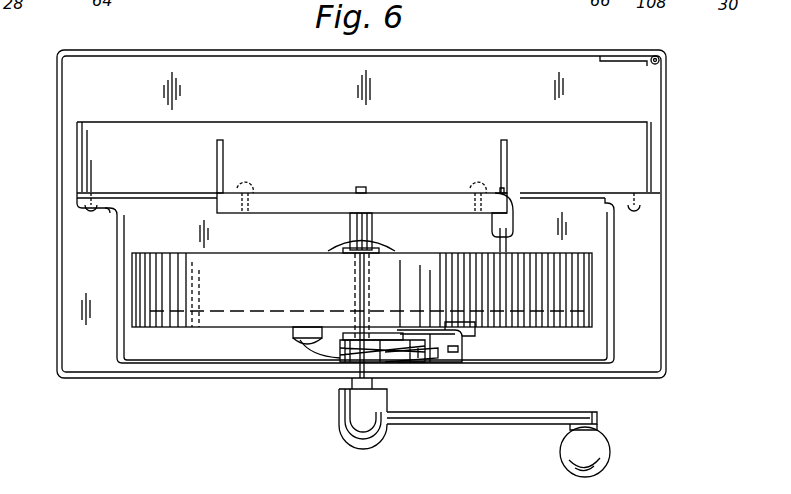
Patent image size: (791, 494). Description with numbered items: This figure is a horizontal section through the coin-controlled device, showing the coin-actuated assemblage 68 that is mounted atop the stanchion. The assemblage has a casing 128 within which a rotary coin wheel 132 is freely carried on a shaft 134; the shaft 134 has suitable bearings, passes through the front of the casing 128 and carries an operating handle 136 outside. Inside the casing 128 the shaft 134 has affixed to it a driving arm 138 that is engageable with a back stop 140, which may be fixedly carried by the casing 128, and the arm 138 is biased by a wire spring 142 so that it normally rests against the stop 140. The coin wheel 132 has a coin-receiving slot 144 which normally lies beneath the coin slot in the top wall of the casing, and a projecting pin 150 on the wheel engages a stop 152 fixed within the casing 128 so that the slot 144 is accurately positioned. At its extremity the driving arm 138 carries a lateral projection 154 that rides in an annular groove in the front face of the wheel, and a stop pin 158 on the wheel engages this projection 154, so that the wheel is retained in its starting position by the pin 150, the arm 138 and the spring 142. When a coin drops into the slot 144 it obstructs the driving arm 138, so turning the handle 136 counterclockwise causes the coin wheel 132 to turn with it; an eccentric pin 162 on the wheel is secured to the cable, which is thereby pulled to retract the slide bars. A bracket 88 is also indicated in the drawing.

The coin-actuated assemblage 68 is at (104, 398).
The support bracket 88 is at (326, 336).
The casing 128 is at (667, 262).
The rotary coin wheel 132 is at (231, 302).
The shaft 134 is at (374, 229).
The operating handle 136 is at (454, 426).
The driving arm 138 is at (361, 341).
The back stop 140 is at (463, 345).
The wire spring 142 is at (403, 355).
The coin-receiving slot 144 is at (360, 302).
The projecting pin 150 is at (501, 242).
The stop 152 is at (513, 226).
The lateral projection 154 is at (435, 355).
The stop pin 158 is at (470, 334).
The eccentric pin 162 is at (299, 337).